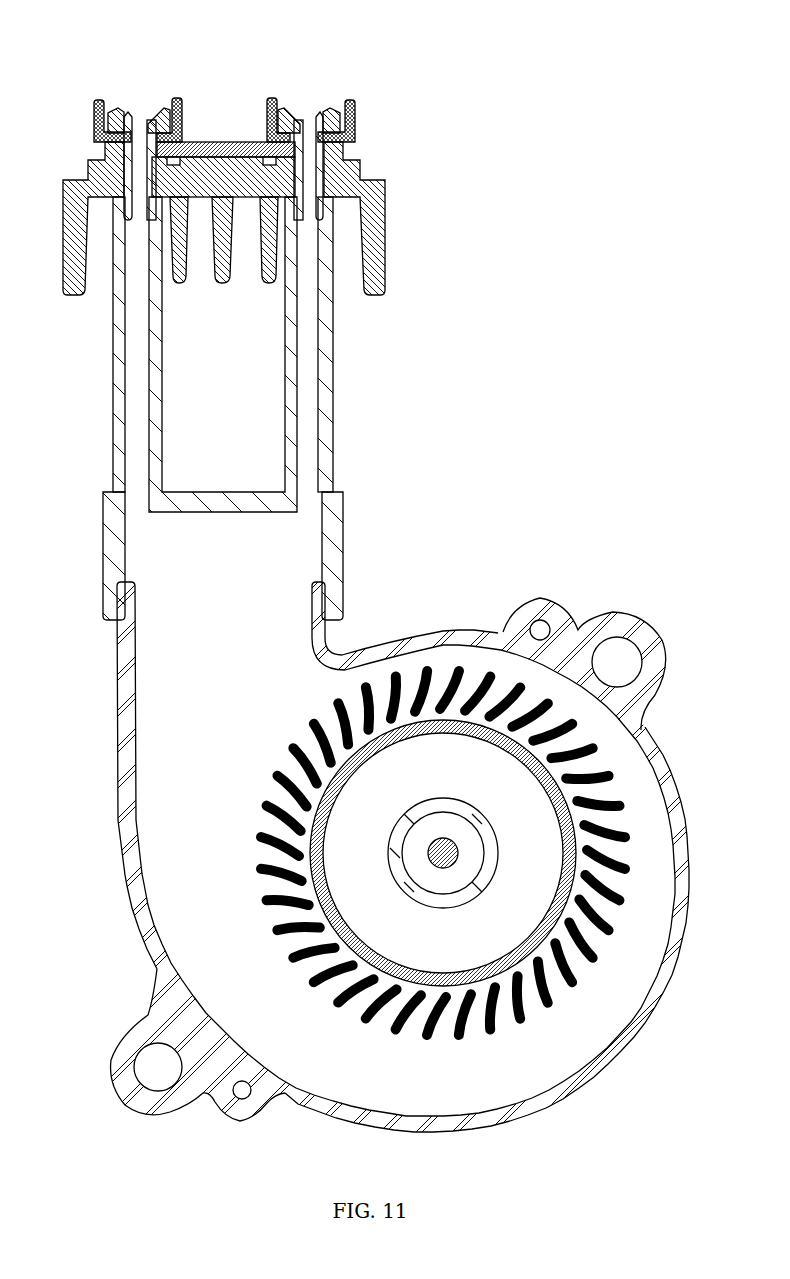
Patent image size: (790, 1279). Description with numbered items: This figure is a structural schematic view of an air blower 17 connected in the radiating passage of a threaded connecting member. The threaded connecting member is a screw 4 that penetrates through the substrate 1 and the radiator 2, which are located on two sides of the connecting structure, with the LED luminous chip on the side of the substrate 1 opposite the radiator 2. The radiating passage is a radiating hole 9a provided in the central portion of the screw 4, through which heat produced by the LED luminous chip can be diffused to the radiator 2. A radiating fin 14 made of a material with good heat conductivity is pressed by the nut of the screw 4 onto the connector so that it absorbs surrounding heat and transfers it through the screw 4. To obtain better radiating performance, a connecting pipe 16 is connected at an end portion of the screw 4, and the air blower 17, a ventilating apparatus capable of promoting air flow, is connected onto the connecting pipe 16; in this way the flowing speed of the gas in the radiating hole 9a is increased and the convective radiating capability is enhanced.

The substrate 1 is at (243, 147).
The radiator 2 is at (357, 175).
The screw 4 is at (120, 107).
The radiating hole 9a is at (313, 110).
The radiating fin 14 is at (95, 110).
The connecting pipe 16 is at (153, 380).
The air blower 17 is at (373, 688).